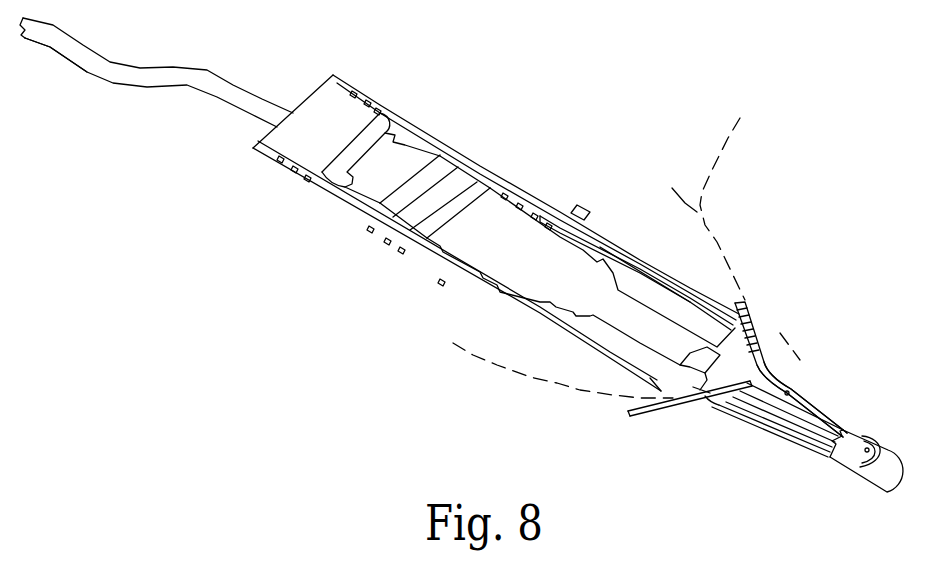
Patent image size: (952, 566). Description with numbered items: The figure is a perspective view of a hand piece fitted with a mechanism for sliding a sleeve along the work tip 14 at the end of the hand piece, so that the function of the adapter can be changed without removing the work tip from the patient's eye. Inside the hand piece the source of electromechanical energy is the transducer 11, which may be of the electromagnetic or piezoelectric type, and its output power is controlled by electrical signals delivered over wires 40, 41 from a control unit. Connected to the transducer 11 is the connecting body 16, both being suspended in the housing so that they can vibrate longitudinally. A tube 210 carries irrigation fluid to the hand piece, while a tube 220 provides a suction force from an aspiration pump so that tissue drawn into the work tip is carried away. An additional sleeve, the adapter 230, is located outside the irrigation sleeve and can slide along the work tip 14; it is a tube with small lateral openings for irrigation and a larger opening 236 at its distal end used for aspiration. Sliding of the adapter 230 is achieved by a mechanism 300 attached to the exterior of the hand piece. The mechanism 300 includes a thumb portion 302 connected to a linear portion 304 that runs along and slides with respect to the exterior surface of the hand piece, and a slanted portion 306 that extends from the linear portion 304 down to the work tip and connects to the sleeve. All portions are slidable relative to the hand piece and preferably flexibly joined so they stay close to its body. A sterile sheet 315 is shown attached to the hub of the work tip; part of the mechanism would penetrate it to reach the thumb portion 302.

The transducer 11 is at (453, 173).
The work tip 14 is at (797, 443).
The connecting body 16 is at (517, 250).
The wire 40 is at (110, 83).
The wire 41 is at (56, 55).
The tube 210 is at (740, 302).
The tube 220 is at (628, 415).
The adapter 230 is at (855, 462).
The opening 236 is at (860, 438).
The mechanism 300 is at (636, 228).
The thumb portion 302 is at (560, 210).
The linear portion 304 is at (650, 265).
The slanted portion 306 is at (777, 367).
The sterile sheet 315 is at (736, 122).